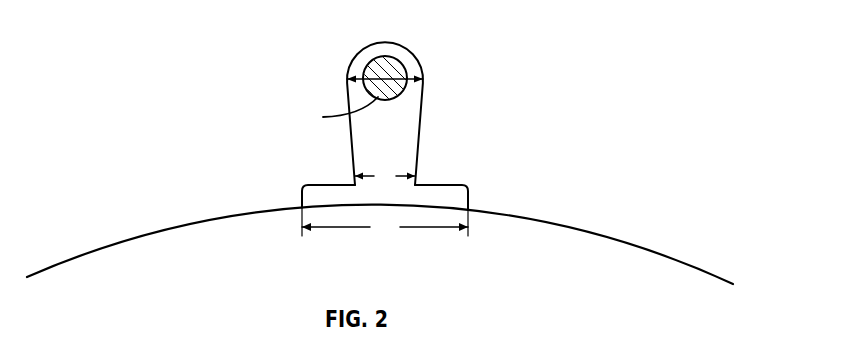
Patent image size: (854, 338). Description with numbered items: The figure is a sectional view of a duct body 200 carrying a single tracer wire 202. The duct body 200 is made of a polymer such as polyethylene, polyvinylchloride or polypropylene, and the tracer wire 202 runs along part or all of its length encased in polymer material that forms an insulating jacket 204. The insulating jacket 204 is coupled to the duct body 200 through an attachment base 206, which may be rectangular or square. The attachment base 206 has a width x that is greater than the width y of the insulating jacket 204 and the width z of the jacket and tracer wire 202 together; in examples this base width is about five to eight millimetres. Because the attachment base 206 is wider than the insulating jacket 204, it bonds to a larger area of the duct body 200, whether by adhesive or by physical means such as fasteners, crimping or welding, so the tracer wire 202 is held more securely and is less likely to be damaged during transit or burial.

The duct body 200 is at (194, 222).
The tracer wire 202 is at (394, 66).
The insulating jacket 204 is at (400, 143).
The attachment base 206 is at (468, 198).